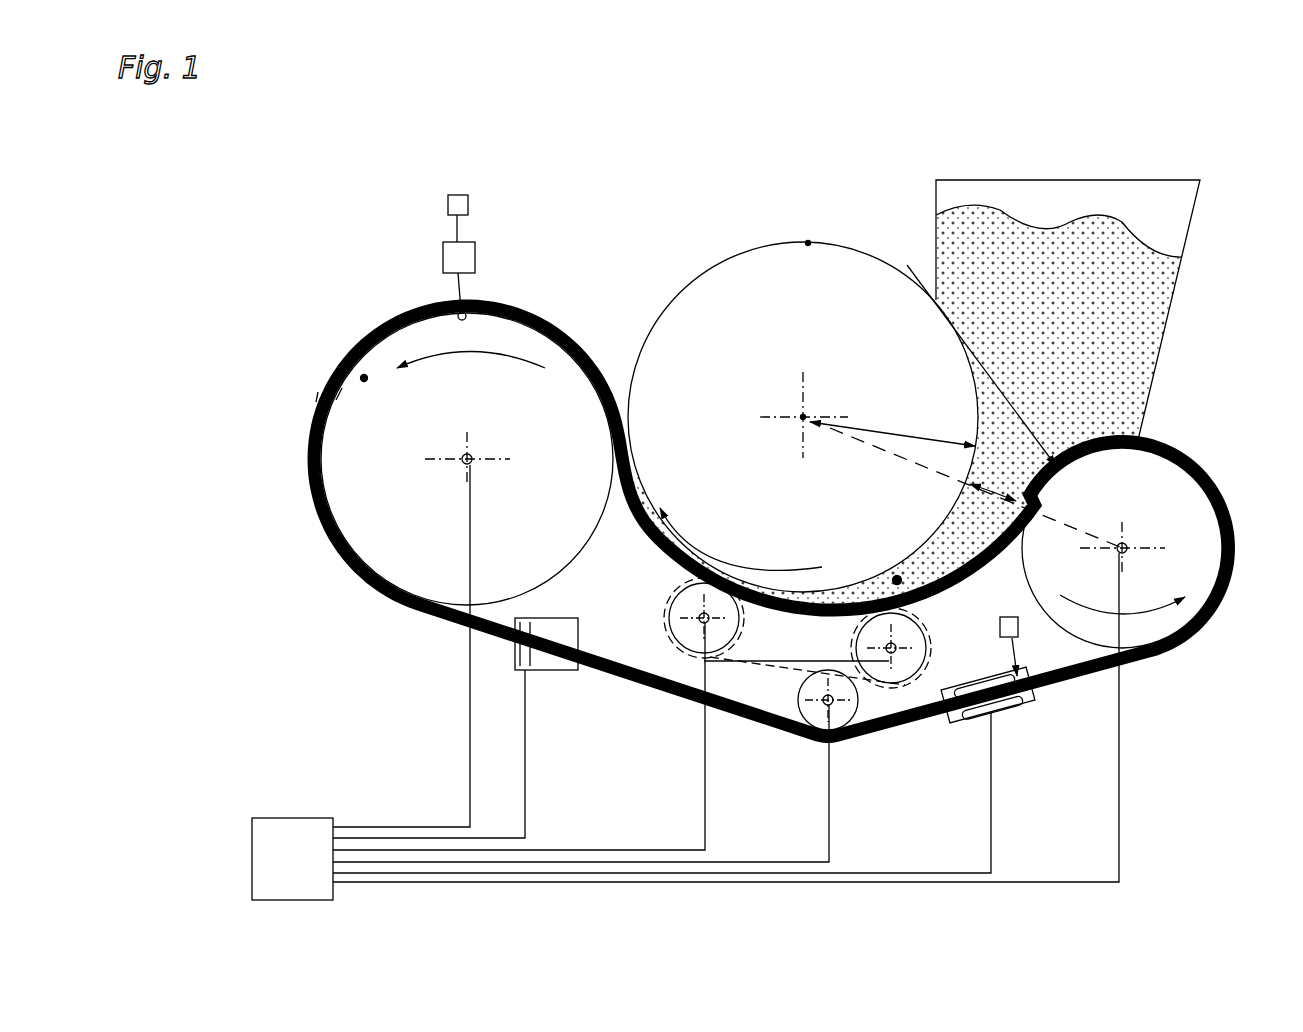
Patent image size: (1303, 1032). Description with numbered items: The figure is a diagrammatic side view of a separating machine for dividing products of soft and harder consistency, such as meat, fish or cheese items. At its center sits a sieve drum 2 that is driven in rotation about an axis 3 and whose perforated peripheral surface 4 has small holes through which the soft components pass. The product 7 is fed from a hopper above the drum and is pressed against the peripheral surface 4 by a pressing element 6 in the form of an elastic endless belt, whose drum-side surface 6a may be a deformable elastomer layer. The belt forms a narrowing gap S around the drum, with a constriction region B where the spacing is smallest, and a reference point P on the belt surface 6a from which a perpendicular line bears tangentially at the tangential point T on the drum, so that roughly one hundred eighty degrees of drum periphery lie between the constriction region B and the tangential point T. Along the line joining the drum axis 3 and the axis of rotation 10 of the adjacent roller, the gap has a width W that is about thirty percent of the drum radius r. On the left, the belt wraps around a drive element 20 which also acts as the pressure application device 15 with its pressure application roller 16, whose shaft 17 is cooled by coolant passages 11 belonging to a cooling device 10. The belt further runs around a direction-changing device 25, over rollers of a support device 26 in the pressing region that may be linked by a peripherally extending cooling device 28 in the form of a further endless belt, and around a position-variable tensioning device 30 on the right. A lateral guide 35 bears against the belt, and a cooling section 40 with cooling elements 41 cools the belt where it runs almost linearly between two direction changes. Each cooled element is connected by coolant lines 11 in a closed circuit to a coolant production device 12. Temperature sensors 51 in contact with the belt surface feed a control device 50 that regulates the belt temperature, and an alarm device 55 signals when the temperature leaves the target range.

The drum 2 is at (743, 262).
The axis 3 is at (806, 420).
The peripheral surface 4 is at (808, 240).
The pressing element 6 is at (318, 420).
The drum-side surface 6a is at (318, 398).
The product 7 is at (1160, 290).
The cooling device 10 is at (473, 455).
The coolant passages 11 is at (477, 561).
The coolant production device 12 is at (258, 845).
The pressure application device 15 is at (361, 376).
The pressure application roller 16 is at (342, 394).
The shaft 17 is at (478, 457).
The drive element 20 is at (330, 465).
The direction-changing device 25 is at (870, 722).
The support device 26 is at (880, 637).
The peripherally extending cooling device 28 is at (779, 616).
The tensioning device 30 is at (1195, 492).
The lateral guide 35 is at (556, 620).
The cooling section 40 is at (970, 686).
The cooling elements 41 is at (978, 686).
The control device 50 is at (478, 256).
The temperature sensors 51 is at (455, 310).
The alarm device 55 is at (478, 205).
The tangential point T is at (946, 312).
The radius r is at (965, 478).
The width W is at (993, 481).
The reference point P is at (1058, 458).
The narrowing gap S is at (896, 574).
The constriction region B is at (668, 500).